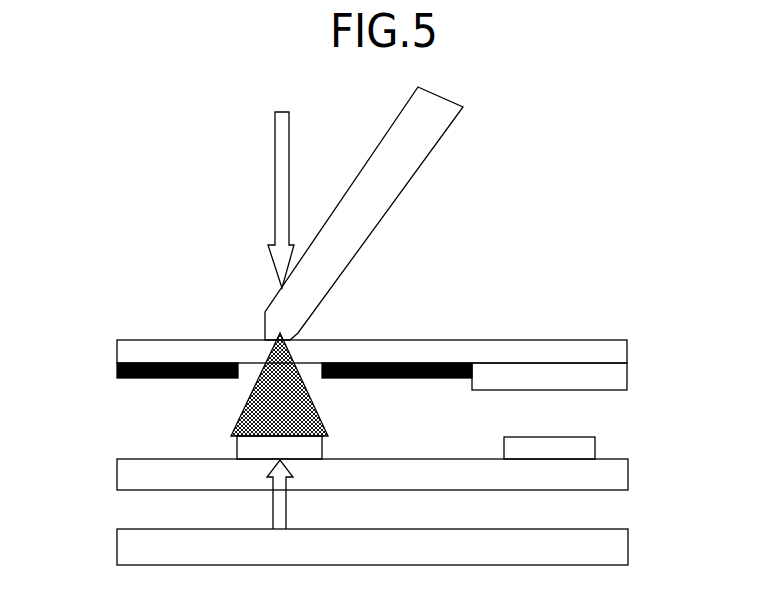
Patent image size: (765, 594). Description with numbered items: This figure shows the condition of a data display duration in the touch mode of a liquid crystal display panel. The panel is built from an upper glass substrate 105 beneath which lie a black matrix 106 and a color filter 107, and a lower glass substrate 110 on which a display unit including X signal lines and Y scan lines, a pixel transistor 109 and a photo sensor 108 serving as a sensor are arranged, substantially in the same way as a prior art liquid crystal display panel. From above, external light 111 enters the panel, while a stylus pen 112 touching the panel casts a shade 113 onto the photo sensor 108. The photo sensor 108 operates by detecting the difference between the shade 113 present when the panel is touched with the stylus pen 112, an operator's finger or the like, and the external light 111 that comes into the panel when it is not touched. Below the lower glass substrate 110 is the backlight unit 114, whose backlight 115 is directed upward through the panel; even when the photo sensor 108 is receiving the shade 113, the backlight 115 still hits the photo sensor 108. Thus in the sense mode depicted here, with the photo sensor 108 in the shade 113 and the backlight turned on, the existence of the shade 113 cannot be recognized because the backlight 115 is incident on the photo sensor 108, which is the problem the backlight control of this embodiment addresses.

The upper glass substrate 105 is at (627, 352).
The black matrix 106 is at (117, 370).
The color filter 107 is at (627, 380).
The photo sensor 108 is at (322, 447).
The pixel transistor 109 is at (595, 444).
The lower glass substrate 110 is at (628, 478).
The external light 111 is at (275, 160).
The stylus pen 112 is at (380, 222).
The shade 113 is at (240, 416).
The backlight unit 114 is at (628, 557).
The backlight 115 is at (286, 512).